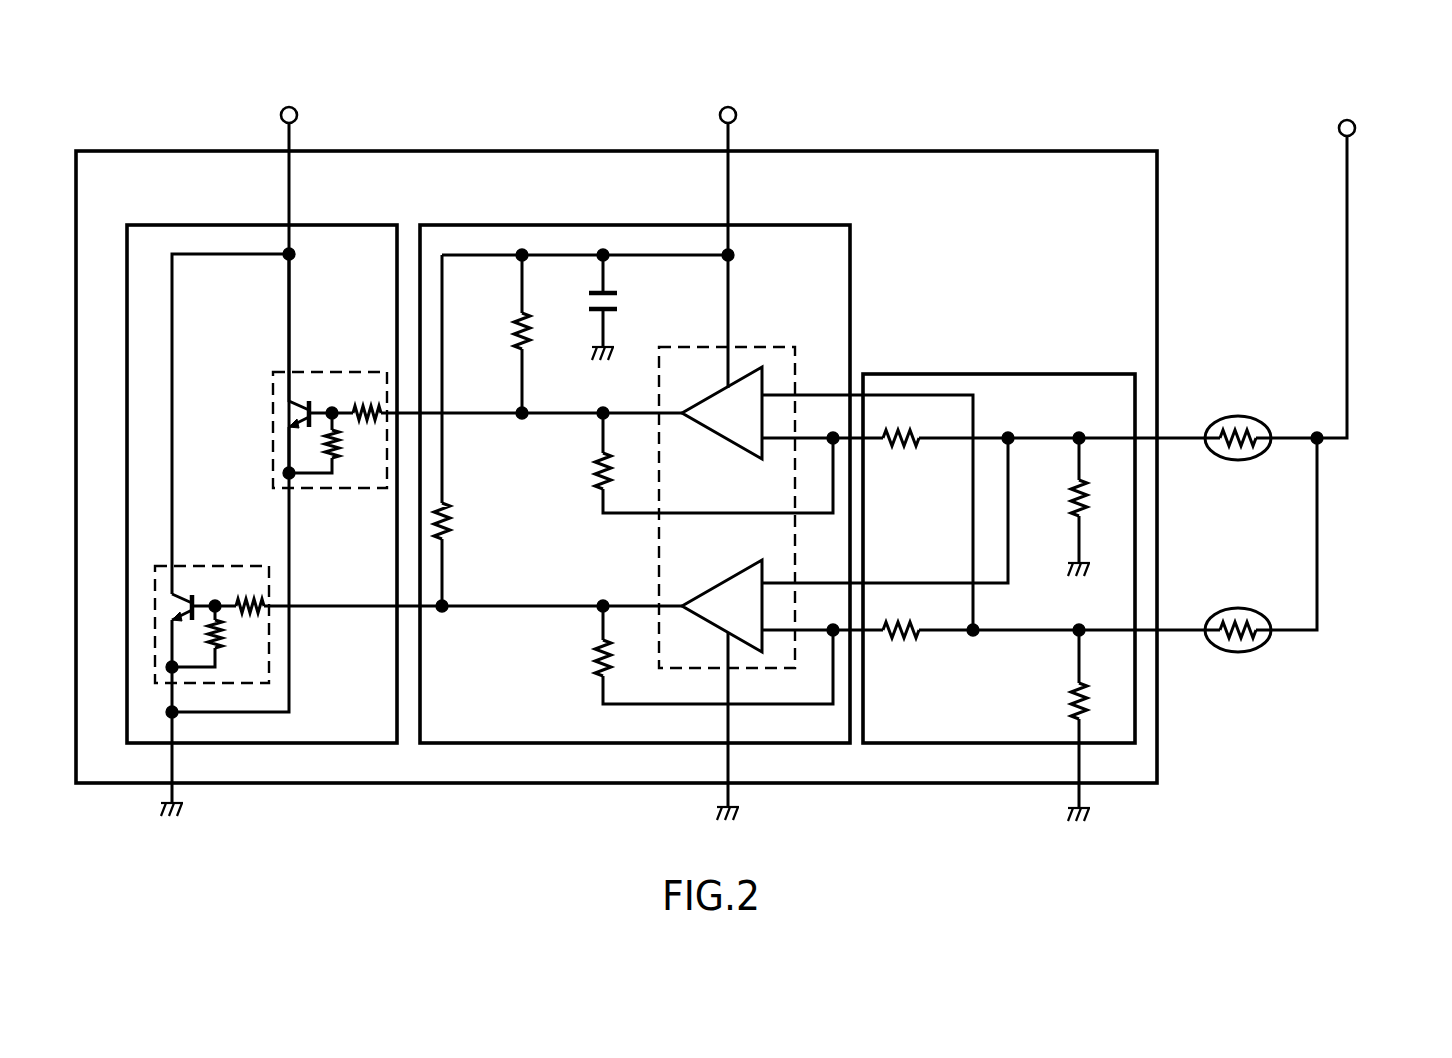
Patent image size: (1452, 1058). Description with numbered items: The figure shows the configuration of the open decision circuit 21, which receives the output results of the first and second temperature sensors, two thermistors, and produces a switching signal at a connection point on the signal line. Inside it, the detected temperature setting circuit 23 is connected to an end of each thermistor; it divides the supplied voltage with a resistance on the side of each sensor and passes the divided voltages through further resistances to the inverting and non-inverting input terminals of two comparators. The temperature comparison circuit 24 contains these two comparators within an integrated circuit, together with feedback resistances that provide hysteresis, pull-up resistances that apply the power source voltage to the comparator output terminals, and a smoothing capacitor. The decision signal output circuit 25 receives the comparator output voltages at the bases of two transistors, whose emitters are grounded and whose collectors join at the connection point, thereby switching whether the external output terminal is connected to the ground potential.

The open decision circuit 21 is at (1013, 150).
The detected temperature setting circuit 23 is at (1110, 373).
The temperature comparison circuit 24 is at (787, 223).
The decision signal output circuit 25 is at (320, 223).